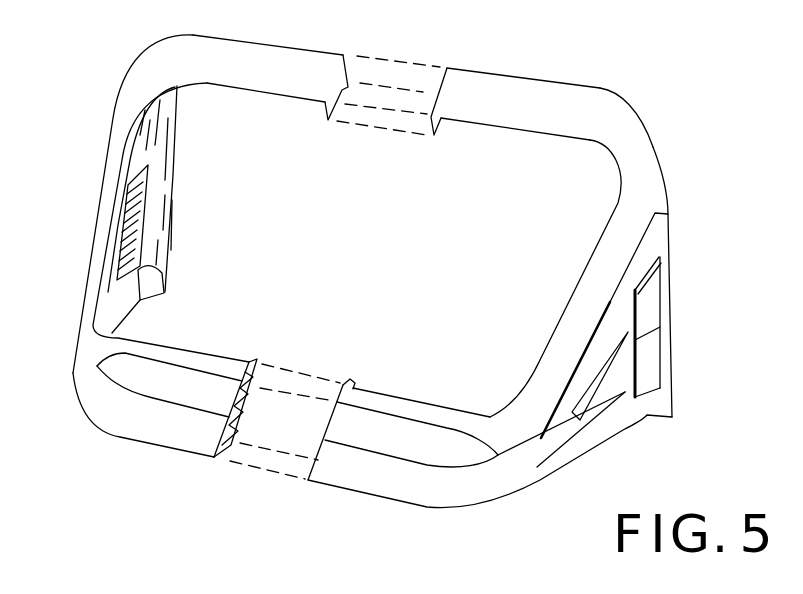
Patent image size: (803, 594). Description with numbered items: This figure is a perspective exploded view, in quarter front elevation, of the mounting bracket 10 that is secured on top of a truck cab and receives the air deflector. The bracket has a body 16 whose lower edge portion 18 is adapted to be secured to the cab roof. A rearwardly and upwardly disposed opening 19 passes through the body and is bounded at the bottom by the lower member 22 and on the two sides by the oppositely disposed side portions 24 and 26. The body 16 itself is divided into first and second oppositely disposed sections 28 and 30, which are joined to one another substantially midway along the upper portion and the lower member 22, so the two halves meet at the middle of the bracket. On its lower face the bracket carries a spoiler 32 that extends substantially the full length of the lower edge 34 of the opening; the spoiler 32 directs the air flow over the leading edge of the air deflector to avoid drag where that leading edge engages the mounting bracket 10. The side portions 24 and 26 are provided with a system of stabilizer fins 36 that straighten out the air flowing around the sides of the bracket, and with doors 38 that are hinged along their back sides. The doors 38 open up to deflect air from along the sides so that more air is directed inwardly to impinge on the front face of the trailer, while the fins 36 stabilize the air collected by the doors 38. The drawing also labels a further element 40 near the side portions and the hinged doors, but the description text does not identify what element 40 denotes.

The mounting bracket 10 is at (544, 74).
The body 16 is at (613, 110).
The lower edge portion 18 is at (127, 437).
The opening 19 is at (613, 195).
The lower member 22 is at (360, 483).
The side portion 24 is at (585, 412).
The side portion 26 is at (157, 128).
The first section 28 is at (650, 166).
The second section 30 is at (147, 77).
The spoiler 32 is at (197, 390).
The lower edge 34 is at (410, 372).
The stabilizer fins 36 is at (637, 355).
The doors 38 is at (155, 200).
The tab 40 is at (148, 272).